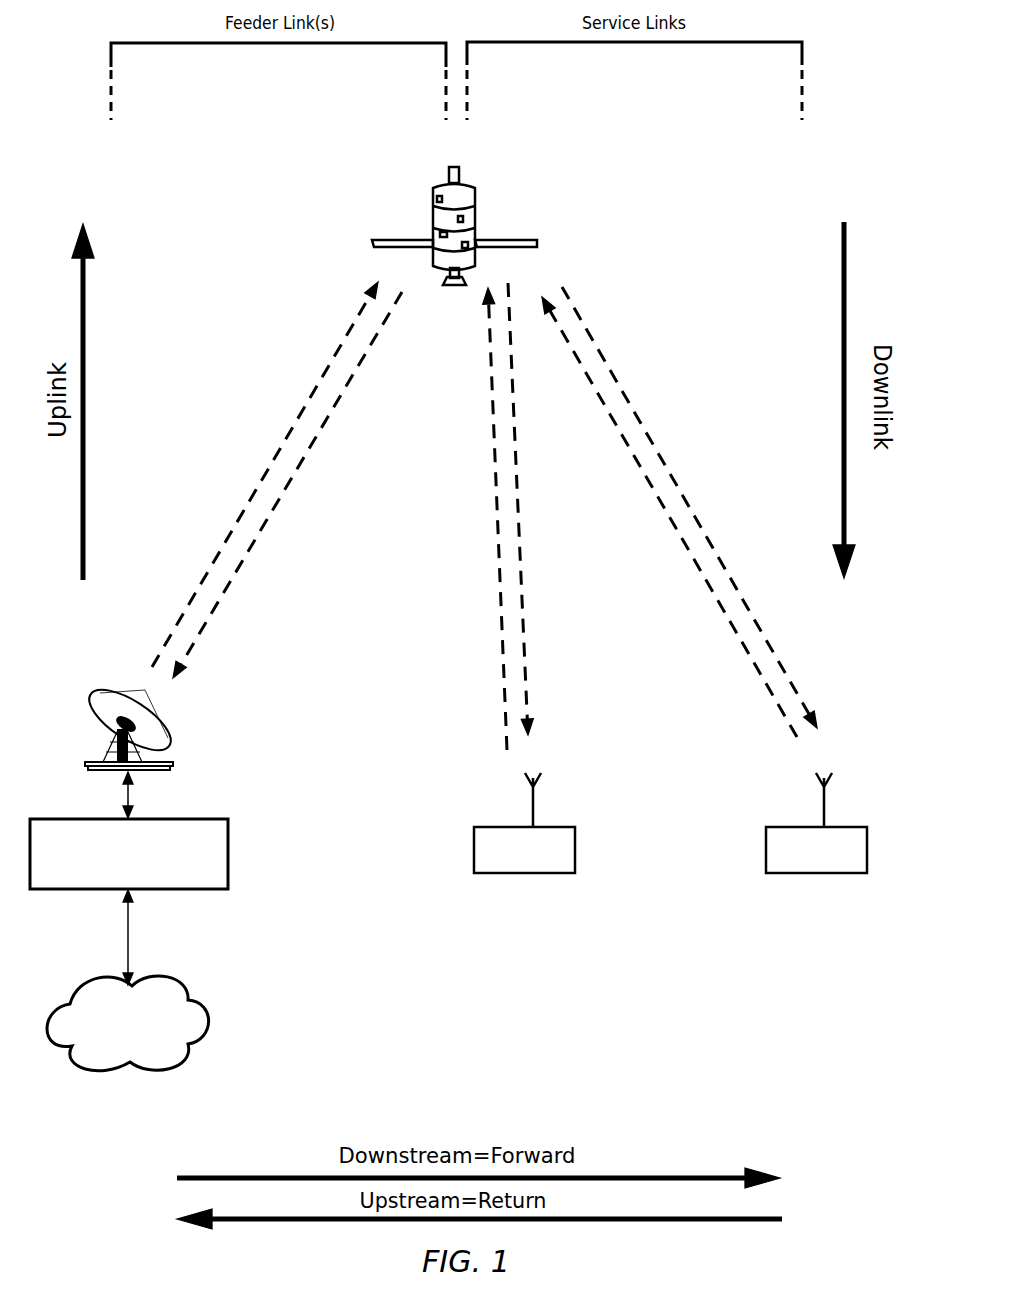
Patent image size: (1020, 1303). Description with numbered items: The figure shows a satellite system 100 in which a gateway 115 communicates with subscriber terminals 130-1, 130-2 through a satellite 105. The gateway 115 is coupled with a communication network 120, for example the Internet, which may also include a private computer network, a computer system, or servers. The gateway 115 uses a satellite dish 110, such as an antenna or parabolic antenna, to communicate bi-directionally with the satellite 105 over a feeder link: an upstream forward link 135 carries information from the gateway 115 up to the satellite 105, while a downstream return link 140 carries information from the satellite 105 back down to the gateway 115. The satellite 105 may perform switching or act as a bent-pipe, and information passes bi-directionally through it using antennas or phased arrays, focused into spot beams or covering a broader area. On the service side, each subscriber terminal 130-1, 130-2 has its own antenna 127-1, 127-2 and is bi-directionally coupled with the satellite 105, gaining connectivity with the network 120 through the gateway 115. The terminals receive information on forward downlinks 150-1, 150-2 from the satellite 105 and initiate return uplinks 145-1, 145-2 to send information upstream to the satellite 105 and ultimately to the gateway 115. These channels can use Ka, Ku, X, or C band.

The satellite system 100 is at (648, 995).
The satellite 105 is at (457, 165).
The satellite dish 110 is at (170, 735).
The gateway 115 is at (228, 853).
The communication network 120 is at (209, 1020).
The antenna 127-1 is at (475, 768).
The antenna 127-2 is at (768, 768).
The subscriber terminal 130-1 is at (474, 849).
The subscriber terminal 130-2 is at (766, 849).
The upstream forward link 135 is at (266, 473).
The downstream return link 140 is at (332, 409).
The return uplink 145-1 is at (498, 522).
The return uplink 145-2 is at (670, 519).
The forward downlink 150-1 is at (525, 618).
The forward downlink 150-2 is at (627, 400).